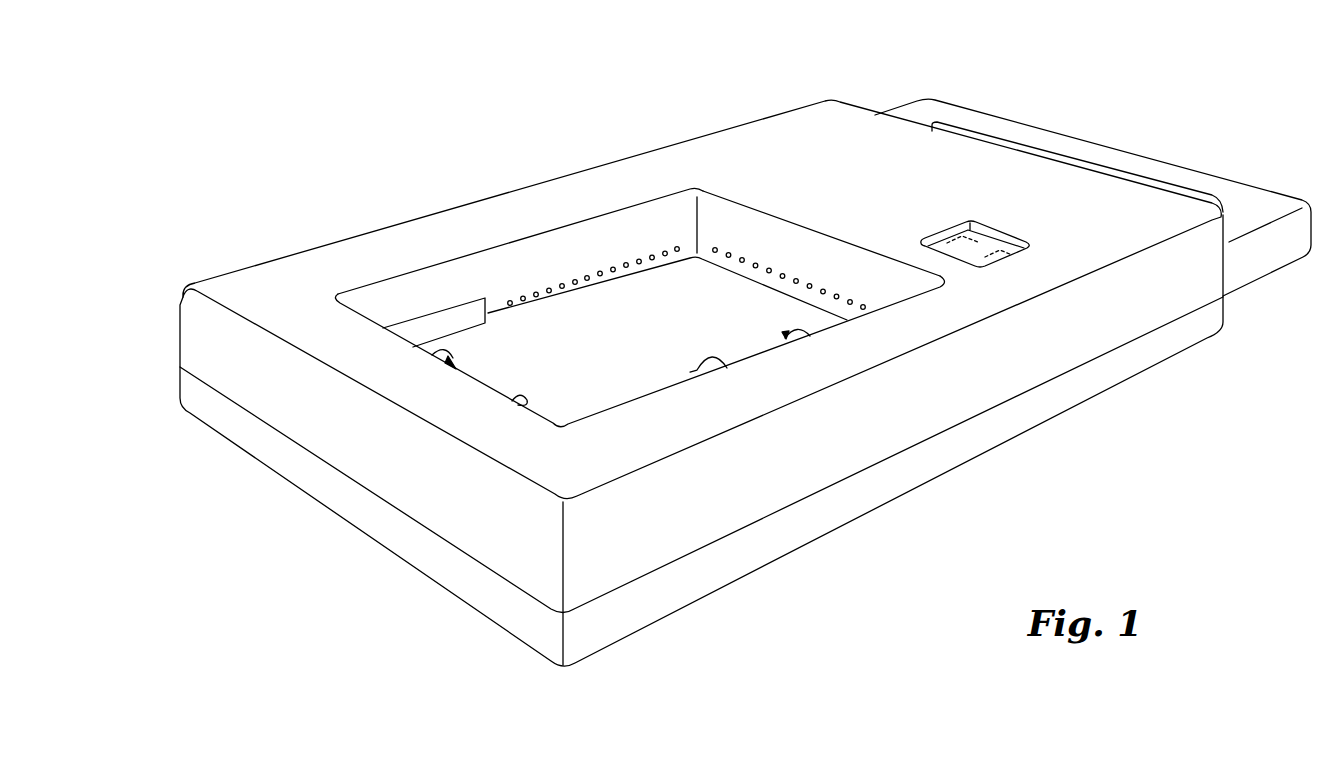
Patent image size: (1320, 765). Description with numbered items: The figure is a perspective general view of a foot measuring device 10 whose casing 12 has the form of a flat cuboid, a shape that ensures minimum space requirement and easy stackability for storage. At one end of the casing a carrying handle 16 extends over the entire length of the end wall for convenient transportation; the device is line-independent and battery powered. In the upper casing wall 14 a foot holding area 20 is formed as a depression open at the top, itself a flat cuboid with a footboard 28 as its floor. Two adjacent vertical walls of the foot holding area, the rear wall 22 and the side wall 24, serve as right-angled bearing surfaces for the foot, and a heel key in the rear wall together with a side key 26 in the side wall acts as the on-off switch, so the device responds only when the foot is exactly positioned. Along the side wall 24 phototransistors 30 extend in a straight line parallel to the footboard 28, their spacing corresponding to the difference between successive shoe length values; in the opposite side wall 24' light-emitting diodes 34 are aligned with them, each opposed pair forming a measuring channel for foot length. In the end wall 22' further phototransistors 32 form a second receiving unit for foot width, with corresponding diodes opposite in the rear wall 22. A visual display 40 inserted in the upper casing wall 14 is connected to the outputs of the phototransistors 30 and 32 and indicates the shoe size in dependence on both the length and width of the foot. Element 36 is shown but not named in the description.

The measuring device 10 is at (745, 350).
The casing 12 is at (955, 413).
The upper casing wall 14 is at (1067, 229).
The carrying handle 16 is at (1257, 192).
The foot holding area 20 is at (639, 304).
The rear wall 22 is at (491, 414).
The end wall 22' is at (821, 233).
The side wall 24 is at (520, 241).
The side wall 24' is at (731, 379).
The side key 26 is at (420, 324).
The footboard 28 is at (653, 322).
The phototransistors 30 is at (586, 276).
The phototransistors 32 is at (754, 262).
The light-emitting diodes 34 is at (810, 336).
The lug 36 is at (432, 355).
The visual display 40 is at (1003, 233).